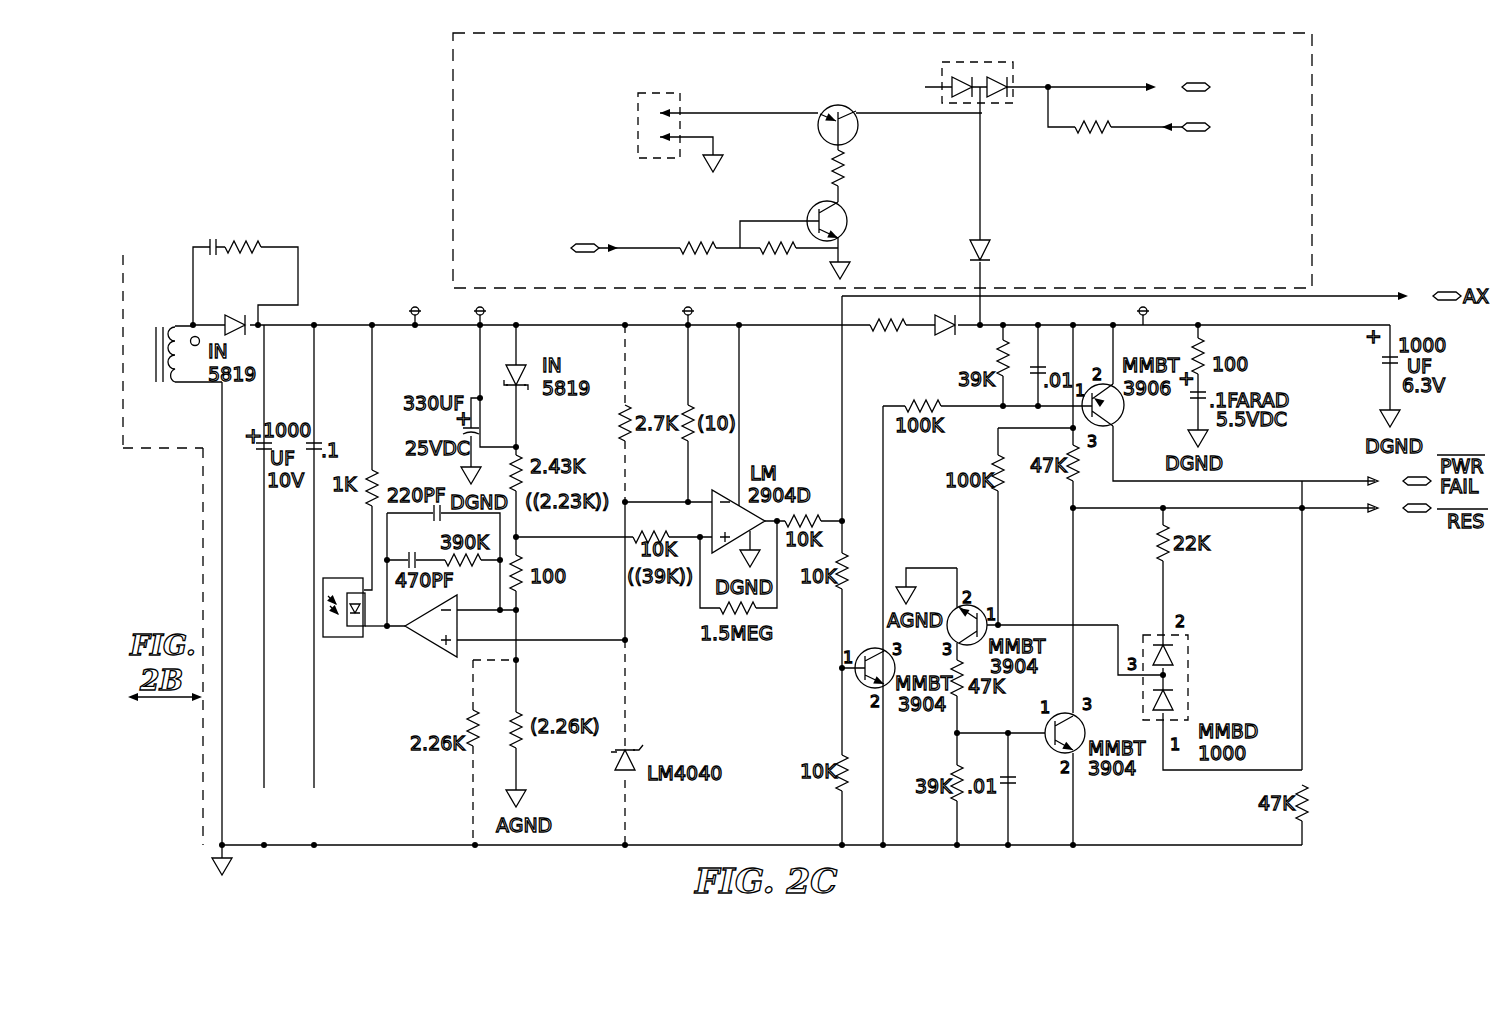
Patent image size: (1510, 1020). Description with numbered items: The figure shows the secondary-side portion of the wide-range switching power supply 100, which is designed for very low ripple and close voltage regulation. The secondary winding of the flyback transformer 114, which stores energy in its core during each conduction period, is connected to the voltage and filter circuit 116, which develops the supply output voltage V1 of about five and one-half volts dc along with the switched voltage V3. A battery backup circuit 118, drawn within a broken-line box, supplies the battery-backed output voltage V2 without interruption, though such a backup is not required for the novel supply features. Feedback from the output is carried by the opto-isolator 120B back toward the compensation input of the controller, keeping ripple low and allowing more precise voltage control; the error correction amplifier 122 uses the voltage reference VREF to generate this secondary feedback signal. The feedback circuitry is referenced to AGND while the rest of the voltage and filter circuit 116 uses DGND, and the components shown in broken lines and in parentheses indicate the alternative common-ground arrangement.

The power supply 100 is at (312, 159).
The flyback transformer 114 is at (159, 308).
The voltage and filter circuit 116 is at (683, 824).
The battery backup circuit 118 is at (453, 122).
The opto-isolator 120B is at (343, 578).
The error correction amplifier 122 is at (460, 629).